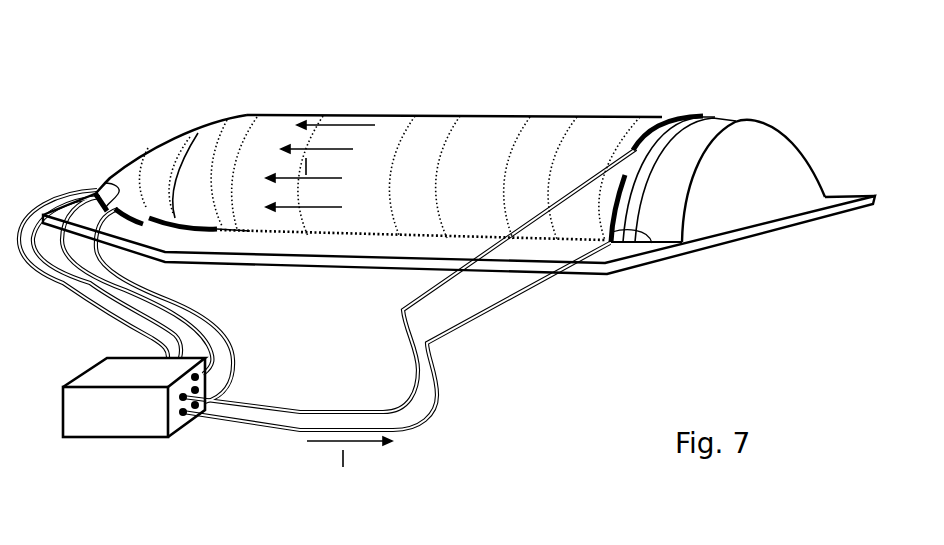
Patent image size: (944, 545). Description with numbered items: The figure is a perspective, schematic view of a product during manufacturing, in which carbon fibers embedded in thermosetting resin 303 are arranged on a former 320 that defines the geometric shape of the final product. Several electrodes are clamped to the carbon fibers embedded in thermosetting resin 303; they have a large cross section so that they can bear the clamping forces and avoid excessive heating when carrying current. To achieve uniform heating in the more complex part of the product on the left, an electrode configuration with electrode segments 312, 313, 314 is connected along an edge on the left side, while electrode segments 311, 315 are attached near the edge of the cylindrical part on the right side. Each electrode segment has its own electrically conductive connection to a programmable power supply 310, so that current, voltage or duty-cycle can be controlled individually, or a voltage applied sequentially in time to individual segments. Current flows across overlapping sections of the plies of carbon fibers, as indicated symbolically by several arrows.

The carbon fibers embedded in thermosetting resin 303 is at (437, 122).
The power supply 310 is at (113, 437).
The electrode segment 311 is at (694, 113).
The electrode segment 312 is at (217, 229).
The electrode segment 313 is at (131, 212).
The electrode segment 314 is at (105, 183).
The electrode segment 315 is at (648, 243).
The former 320 is at (724, 128).